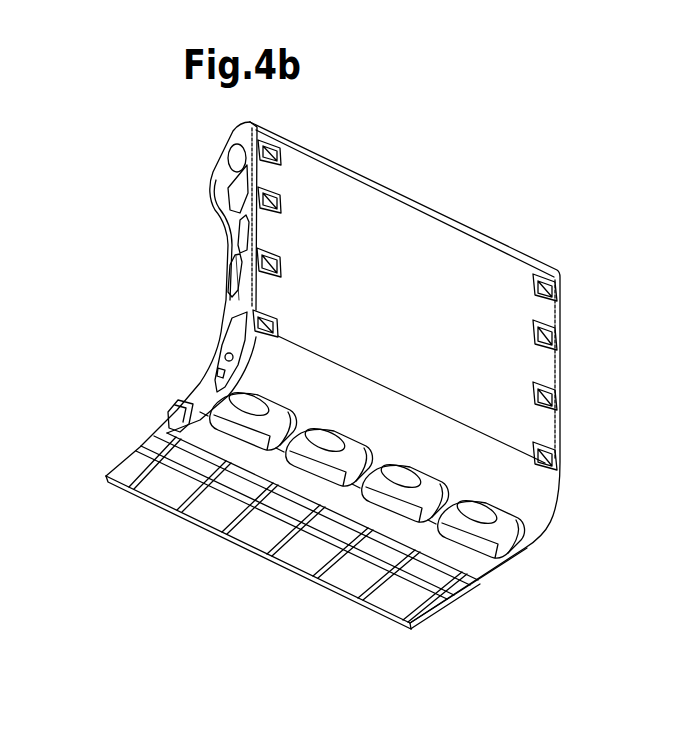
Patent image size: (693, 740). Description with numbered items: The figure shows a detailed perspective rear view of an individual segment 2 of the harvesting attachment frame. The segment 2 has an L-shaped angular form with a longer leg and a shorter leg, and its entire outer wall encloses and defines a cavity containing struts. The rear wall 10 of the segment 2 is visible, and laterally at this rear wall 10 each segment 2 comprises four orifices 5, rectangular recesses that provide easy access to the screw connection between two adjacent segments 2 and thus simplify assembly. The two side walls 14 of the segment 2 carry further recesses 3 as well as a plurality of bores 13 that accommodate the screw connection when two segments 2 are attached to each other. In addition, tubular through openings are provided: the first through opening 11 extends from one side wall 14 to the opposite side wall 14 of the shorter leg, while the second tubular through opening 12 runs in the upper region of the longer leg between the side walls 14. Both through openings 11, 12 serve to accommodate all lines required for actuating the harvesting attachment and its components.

The segment 2 is at (570, 200).
The recesses 3 is at (503, 551).
The orifices 5 is at (552, 340).
The rear wall 10 is at (581, 436).
The first through opening 11 is at (175, 413).
The second tubular through opening 12 is at (232, 163).
The bores 13 is at (220, 205).
The side walls 14 is at (233, 303).